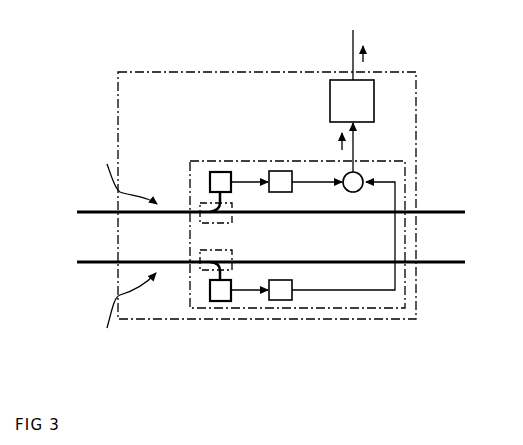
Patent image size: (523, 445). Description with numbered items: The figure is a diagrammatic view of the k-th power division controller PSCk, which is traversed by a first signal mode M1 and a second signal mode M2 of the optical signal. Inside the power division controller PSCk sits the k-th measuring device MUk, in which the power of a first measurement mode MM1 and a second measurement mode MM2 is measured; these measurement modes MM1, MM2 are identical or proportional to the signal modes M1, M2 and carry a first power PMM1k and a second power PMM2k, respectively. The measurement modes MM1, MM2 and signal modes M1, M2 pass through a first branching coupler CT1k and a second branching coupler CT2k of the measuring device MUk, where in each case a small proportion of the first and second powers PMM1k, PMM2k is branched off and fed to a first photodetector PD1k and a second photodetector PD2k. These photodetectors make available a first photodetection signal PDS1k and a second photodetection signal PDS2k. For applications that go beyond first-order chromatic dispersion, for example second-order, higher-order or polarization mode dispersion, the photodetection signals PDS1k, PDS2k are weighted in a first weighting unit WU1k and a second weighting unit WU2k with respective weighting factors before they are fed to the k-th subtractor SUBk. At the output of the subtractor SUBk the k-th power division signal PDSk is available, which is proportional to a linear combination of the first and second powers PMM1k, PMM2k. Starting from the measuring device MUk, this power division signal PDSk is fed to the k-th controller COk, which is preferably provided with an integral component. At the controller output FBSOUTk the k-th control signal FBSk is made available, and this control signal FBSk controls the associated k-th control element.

The power division controller PSCk is at (416, 118).
The measuring device MUk is at (406, 186).
The first signal mode M1 is at (107, 226).
The second signal mode M2 is at (107, 272).
The first power PMM1k is at (96, 176).
The first measurement mode MM1 is at (54, 180).
The second power PMM2k is at (101, 325).
The second measurement mode MM2 is at (66, 368).
The first branching coupler CT1k is at (229, 212).
The second branching coupler CT2k is at (203, 263).
The first photodetector PD1k is at (208, 182).
The second photodetector PD2k is at (210, 302).
The first photodetection signal PDS1k is at (256, 172).
The second photodetection signal PDS2k is at (259, 299).
The first weighting unit WU1k is at (272, 168).
The second weighting unit WU2k is at (290, 300).
The subtractor SUBk is at (367, 168).
The controller COk is at (330, 100).
The power division signal PDSk is at (342, 139).
The controller output FBSOUTk is at (352, 78).
The control signal FBSk is at (364, 52).